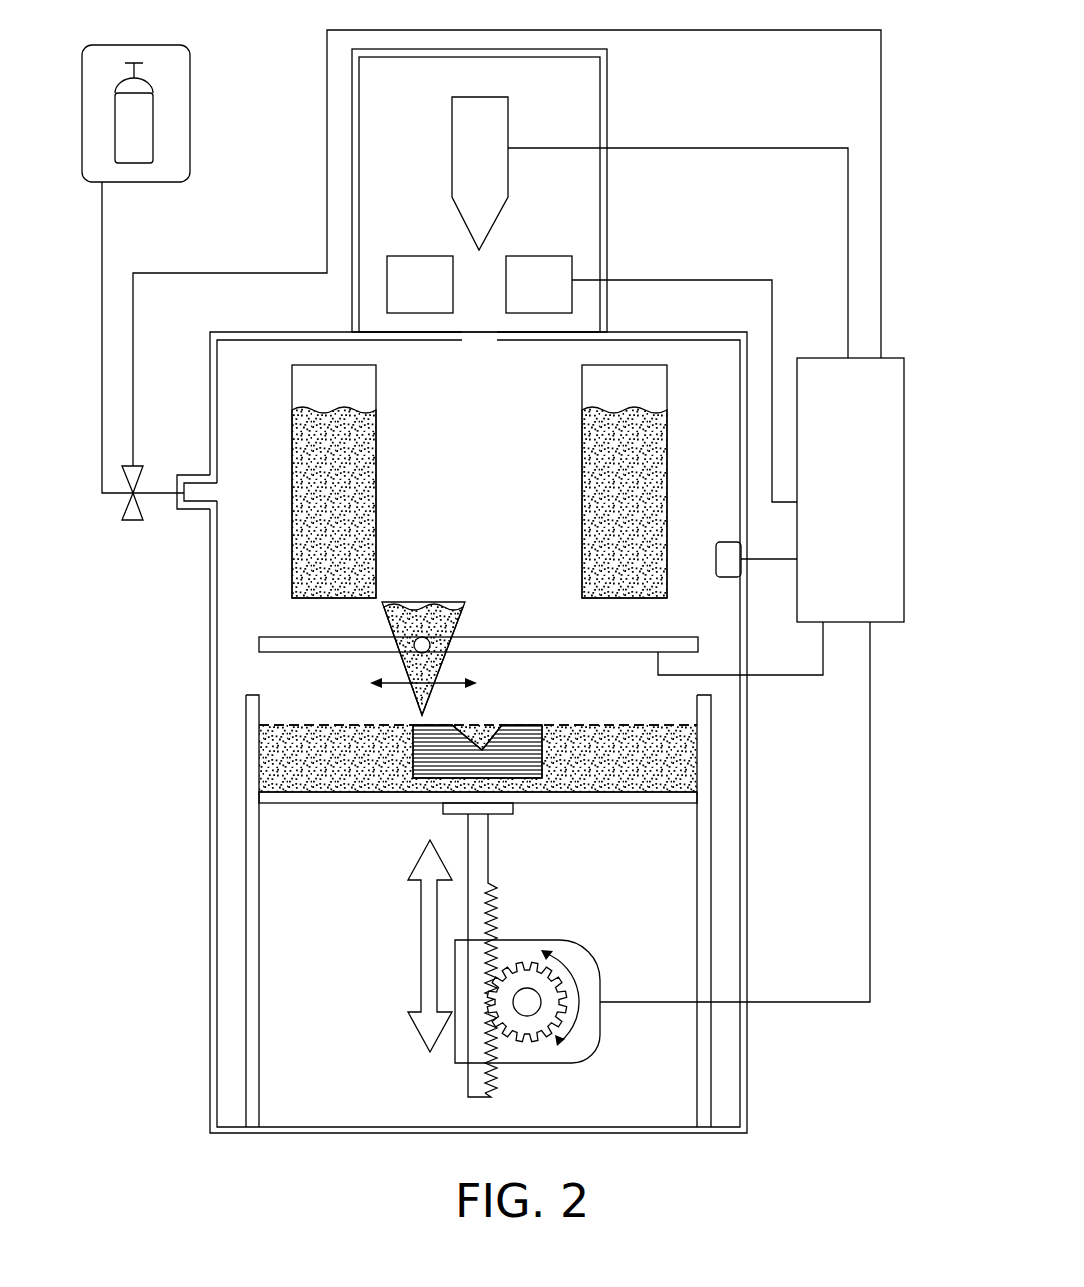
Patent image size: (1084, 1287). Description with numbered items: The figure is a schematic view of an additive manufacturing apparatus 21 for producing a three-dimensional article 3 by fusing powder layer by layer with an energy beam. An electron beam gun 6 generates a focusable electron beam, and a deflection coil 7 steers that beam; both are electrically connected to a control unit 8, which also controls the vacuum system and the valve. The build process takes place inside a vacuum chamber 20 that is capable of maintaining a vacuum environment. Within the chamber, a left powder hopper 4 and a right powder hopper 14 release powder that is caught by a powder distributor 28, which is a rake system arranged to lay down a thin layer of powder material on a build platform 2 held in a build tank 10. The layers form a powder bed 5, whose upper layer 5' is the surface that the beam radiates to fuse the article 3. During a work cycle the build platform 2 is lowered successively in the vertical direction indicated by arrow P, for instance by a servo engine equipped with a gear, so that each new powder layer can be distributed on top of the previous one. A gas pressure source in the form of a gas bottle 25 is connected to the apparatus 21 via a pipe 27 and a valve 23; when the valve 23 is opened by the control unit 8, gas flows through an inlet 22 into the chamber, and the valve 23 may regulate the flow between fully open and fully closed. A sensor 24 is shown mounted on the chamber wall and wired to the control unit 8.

The build platform 2 is at (335, 801).
The three-dimensional object 3 is at (533, 727).
The left powder hopper 4 is at (377, 487).
The powder bed 5 is at (478, 728).
The upper layer of the powder bed 5' is at (417, 691).
The electron beam gun 6 is at (471, 165).
The deflection coil 7 is at (532, 297).
The control unit 8 is at (842, 509).
The build tank 10 is at (252, 967).
The right powder hopper 14 is at (582, 487).
The vacuum chamber 20 is at (747, 853).
The additive manufacturing apparatus 21 is at (296, 70).
The inlet 22 is at (228, 493).
The valve 23 is at (127, 522).
The sensor 24 is at (713, 577).
The gas bottle 25 is at (202, 115).
The pipe 27 is at (103, 243).
The powder distributor 28 is at (465, 617).
The arrow P is at (420, 963).